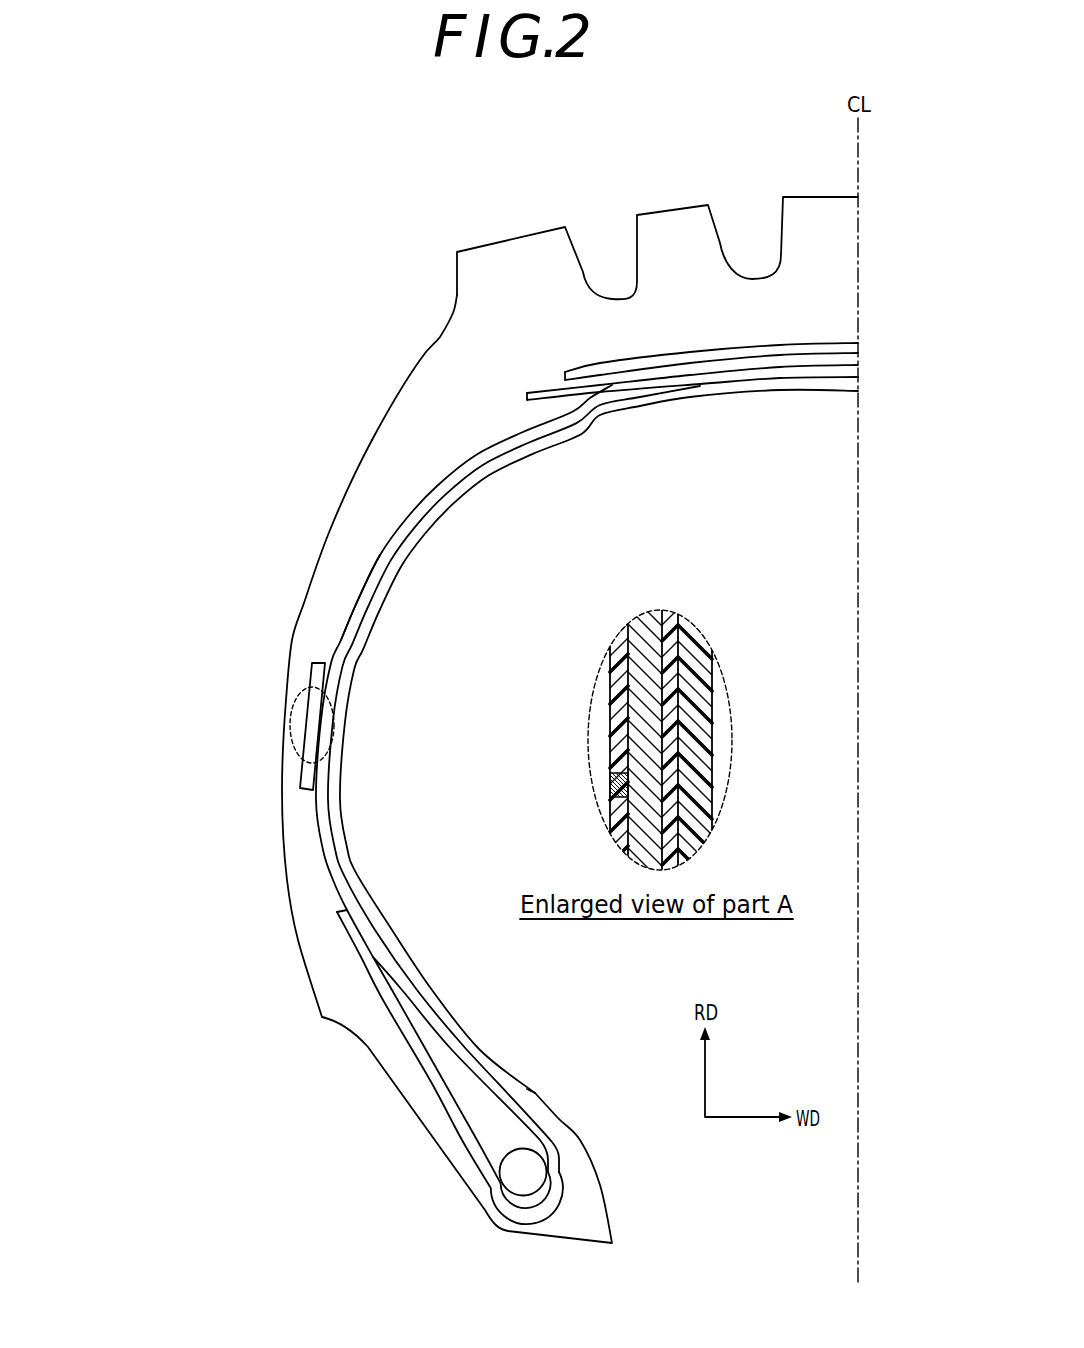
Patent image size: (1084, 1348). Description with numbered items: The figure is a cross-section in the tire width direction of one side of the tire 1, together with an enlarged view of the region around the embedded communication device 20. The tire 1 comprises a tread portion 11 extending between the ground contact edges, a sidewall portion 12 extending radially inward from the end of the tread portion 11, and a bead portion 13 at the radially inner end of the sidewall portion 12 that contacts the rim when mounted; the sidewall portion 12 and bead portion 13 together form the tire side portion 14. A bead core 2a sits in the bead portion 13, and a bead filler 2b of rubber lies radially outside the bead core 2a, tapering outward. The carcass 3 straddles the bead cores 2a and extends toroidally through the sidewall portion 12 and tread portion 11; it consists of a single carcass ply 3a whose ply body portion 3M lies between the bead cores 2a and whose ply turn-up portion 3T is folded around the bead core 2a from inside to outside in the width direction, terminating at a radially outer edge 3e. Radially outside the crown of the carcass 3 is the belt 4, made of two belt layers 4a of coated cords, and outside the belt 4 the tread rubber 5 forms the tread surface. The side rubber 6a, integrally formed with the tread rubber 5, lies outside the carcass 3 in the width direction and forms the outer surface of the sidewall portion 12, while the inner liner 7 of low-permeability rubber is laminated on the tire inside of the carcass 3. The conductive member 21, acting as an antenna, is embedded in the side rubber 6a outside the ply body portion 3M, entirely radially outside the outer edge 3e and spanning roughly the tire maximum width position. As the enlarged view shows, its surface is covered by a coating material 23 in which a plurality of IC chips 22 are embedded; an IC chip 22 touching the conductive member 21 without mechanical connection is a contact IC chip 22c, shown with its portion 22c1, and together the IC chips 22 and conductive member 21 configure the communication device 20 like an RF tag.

The tire 1 is at (358, 175).
The bead core 2a is at (530, 1172).
The bead filler 2b is at (458, 1077).
The carcass 3 is at (549, 805).
The carcass ply 3a is at (337, 863).
The ply body portion 3M is at (392, 548).
The ply turn-up portion 3T is at (408, 1033).
The outer edge of ply turn-up portion 3e is at (337, 912).
The belt 4 is at (468, 352).
The belt layer 4a is at (566, 375).
The tread rubber 5 is at (667, 232).
The side rubber 6a is at (297, 813).
The inner liner 7 is at (486, 473).
The tread portion 11 is at (624, 187).
The sidewall portion 12 is at (254, 601).
The bead portion 13 is at (378, 1140).
The tire side portion 14 is at (326, 448).
The communication device 20 is at (307, 730).
The conductive member 21 is at (643, 571).
The IC chip 22 is at (396, 782).
The contact IC chip 22c is at (546, 795).
The cover end portion 22c1 is at (612, 785).
The coating material 23 is at (463, 727).